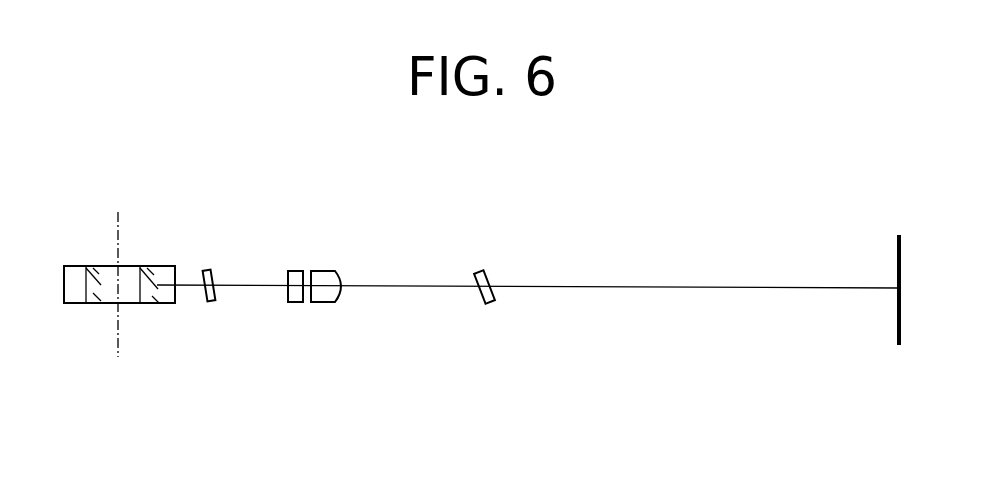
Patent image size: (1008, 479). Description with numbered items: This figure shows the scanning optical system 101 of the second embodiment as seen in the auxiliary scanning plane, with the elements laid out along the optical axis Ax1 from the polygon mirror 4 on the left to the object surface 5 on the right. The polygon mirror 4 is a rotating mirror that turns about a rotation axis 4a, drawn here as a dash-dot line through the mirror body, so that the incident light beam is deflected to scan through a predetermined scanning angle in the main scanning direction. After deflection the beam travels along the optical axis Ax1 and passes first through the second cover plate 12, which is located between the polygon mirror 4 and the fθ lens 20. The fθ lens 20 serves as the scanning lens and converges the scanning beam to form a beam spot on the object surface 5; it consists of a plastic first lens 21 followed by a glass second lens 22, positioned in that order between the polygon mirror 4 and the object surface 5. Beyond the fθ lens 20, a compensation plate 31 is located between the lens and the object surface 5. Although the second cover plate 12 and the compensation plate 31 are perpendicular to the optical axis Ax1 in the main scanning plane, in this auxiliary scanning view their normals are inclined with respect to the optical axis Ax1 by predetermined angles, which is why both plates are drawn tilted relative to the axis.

The scanning optical system 101 is at (552, 215).
The polygon mirror 4 is at (152, 305).
The rotation axis 4a is at (118, 242).
The second cover plate 12 is at (210, 303).
The fθ lens 20 is at (316, 331).
The first lens 21 is at (295, 302).
The second lens 22 is at (330, 295).
The compensation plate 31 is at (488, 303).
The optical axis Ax1 is at (712, 291).
The object surface 5 is at (897, 322).